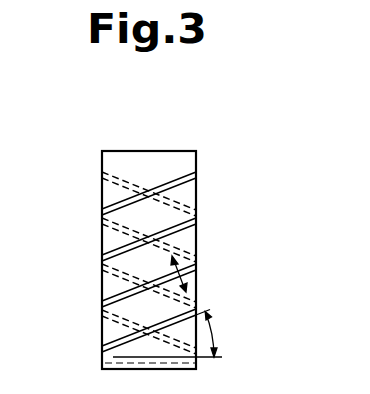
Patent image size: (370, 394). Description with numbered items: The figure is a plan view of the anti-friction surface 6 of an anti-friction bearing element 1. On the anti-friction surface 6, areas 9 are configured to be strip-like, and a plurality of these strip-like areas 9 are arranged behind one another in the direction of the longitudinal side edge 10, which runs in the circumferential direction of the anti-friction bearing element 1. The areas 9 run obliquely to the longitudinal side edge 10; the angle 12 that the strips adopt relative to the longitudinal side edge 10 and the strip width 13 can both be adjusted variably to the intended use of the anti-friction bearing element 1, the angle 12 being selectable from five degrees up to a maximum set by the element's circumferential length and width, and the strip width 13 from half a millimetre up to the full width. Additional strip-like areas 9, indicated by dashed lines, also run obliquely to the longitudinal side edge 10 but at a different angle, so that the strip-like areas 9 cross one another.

The anti-friction bearing element 1 is at (218, 167).
The anti-friction surface 6 is at (149, 169).
The strip-like areas 9 is at (102, 344).
The longitudinal side edge 10 is at (101, 178).
The angle 12 is at (217, 333).
The strip width 13 is at (197, 282).